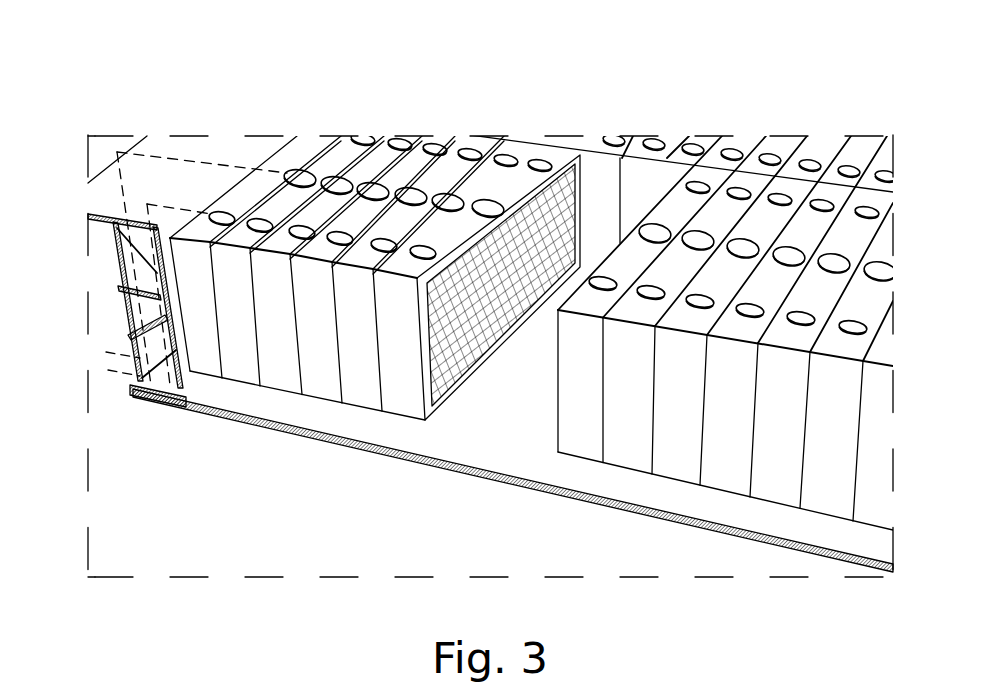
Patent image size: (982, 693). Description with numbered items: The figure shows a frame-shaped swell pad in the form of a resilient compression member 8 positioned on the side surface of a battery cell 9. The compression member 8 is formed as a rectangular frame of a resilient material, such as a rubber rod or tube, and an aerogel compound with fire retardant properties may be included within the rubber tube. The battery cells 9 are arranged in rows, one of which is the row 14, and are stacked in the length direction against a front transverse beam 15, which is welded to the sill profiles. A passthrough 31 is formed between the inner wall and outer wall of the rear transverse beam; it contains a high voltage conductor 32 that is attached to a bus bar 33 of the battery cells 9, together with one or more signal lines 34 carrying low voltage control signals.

The resilient compression member 8 is at (552, 220).
The battery cell 9 is at (412, 375).
The row 14 is at (385, 245).
The front transverse beam 15 is at (232, 157).
The passthrough 31 is at (166, 406).
The high voltage conductor 32 is at (112, 372).
The bus bar 33 is at (300, 215).
The signal line 34 is at (110, 352).